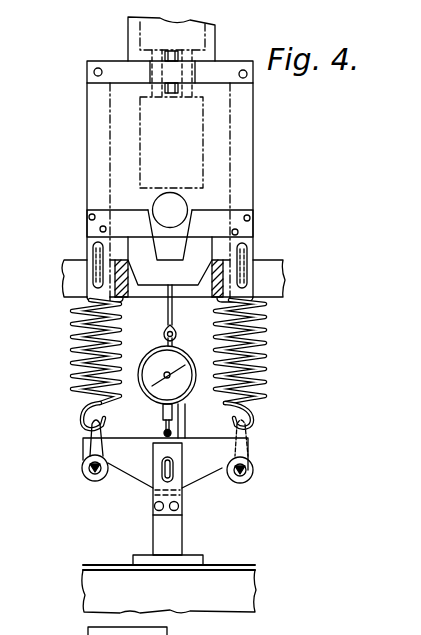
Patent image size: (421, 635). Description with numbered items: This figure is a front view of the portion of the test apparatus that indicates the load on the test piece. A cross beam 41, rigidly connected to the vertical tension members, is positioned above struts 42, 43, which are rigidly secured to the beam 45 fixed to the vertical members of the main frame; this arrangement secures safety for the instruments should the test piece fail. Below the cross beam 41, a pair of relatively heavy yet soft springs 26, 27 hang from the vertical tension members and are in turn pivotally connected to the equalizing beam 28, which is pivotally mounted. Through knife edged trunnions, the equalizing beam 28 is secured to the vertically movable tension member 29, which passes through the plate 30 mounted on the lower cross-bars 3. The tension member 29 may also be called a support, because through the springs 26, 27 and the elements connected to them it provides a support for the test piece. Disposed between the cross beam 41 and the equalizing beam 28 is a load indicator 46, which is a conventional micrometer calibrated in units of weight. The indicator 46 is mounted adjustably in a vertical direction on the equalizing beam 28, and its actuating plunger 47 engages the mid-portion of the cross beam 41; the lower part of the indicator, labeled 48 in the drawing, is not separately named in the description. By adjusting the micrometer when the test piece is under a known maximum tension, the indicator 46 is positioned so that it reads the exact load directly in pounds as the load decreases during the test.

The lower cross-bars 3 is at (250, 598).
The spring 26 is at (268, 358).
The spring 27 is at (72, 347).
The equalizing beam 28 is at (82, 448).
The tension member 29 is at (178, 497).
The plate 30 is at (193, 563).
The cross beam 41 is at (213, 215).
The strut 42 is at (224, 264).
The strut 43 is at (107, 290).
The beam 45 is at (275, 293).
The load indicator 46 is at (175, 347).
The actuating plunger 47 is at (174, 330).
The lower stem 48 is at (163, 423).